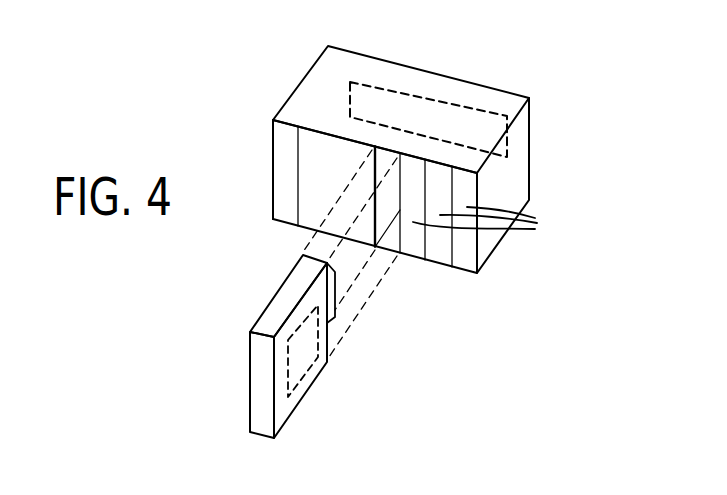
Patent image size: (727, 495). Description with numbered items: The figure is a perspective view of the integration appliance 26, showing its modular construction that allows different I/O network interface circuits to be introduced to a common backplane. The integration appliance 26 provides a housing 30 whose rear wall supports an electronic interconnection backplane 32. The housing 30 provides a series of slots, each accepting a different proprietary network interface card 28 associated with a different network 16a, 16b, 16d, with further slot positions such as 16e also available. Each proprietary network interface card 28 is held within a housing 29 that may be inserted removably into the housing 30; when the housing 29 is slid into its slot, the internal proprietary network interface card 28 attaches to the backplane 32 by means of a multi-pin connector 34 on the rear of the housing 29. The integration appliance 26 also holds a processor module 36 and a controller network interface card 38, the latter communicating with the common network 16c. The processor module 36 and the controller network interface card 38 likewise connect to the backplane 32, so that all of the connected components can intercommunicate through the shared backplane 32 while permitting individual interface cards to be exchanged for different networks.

The integration appliance 26 is at (503, 50).
The housing 30 is at (405, 64).
The electronic interconnection backplane 32 is at (480, 107).
The processor module 36 is at (325, 147).
The controller network interface card 38 is at (287, 160).
The network 16a is at (262, 418).
The network 16b is at (405, 248).
The common network 16c is at (275, 265).
The network 16d is at (440, 250).
The connector receiving slot 16e is at (463, 258).
The proprietary network interface card 28 is at (300, 365).
The housing 29 is at (249, 383).
The multi-pin connector 34 is at (337, 308).